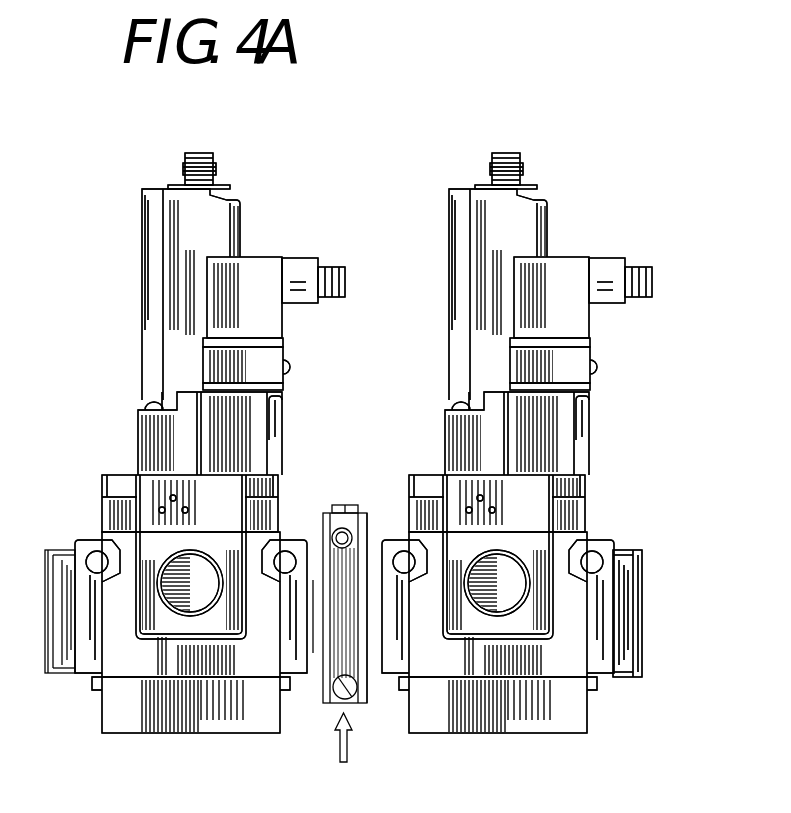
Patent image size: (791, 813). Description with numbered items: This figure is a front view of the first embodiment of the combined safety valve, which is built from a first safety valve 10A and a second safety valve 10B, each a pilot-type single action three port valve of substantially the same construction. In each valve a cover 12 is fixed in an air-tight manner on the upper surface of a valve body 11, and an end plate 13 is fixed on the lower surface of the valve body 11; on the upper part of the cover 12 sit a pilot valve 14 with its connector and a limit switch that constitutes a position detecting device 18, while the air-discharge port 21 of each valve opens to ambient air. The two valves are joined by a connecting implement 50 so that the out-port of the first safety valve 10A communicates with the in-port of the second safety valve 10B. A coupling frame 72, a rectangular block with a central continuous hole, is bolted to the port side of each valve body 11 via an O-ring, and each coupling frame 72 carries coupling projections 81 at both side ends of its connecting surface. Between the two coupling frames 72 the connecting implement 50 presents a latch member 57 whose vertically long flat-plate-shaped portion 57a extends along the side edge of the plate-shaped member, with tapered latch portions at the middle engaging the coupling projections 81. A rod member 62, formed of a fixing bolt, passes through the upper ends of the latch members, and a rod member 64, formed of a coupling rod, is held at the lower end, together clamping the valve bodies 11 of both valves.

The first safety valve 10A is at (530, 419).
The second safety valve 10B is at (326, 154).
The valve body 11 is at (137, 667).
The cover 12 is at (107, 507).
The end plate 13 is at (195, 725).
The pilot valve 14 is at (252, 430).
The position detecting device 18 is at (176, 222).
The air-discharge port 21 is at (173, 572).
The connecting implement 50 is at (343, 757).
The latch member 57 is at (316, 683).
The flat-plate-shaped portion 57a is at (373, 620).
The rod member 62 is at (346, 504).
The rod member 64 is at (358, 690).
The coupling frame 72 is at (313, 555).
The coupling projection 81 is at (640, 650).